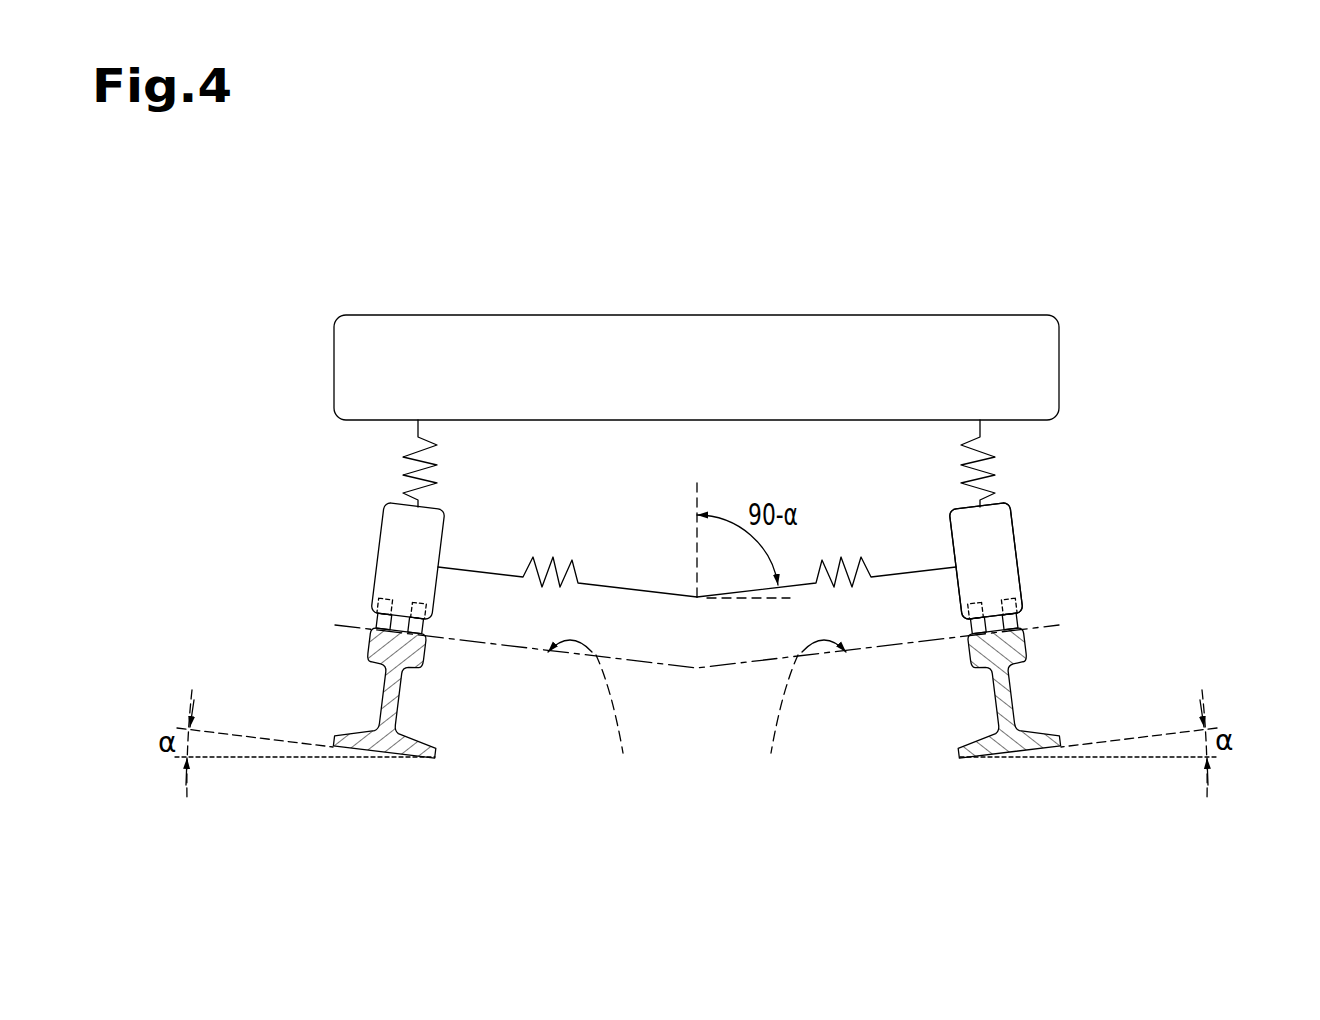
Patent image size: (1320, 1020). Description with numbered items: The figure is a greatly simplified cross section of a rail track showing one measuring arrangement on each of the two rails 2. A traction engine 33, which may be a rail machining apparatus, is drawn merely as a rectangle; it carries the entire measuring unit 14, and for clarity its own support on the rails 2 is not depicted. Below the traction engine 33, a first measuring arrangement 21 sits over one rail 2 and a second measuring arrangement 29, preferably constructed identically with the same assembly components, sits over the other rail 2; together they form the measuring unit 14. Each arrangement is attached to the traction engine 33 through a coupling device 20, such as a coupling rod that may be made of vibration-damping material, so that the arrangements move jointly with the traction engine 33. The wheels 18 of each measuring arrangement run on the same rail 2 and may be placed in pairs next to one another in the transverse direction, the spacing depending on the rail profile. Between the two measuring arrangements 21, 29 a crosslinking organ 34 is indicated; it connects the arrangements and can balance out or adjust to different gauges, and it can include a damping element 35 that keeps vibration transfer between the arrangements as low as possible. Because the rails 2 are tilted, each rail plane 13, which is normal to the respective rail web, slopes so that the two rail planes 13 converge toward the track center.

The rail 2 is at (355, 686).
The rail plane 13 is at (697, 714).
The measuring unit 14 is at (843, 455).
The wheel 18 is at (370, 619).
The coupling device 20 is at (382, 466).
The first measuring arrangement 21 is at (1042, 557).
The second measuring arrangement 29 is at (352, 568).
The traction engine 33 is at (925, 291).
The crosslinking organ 34 is at (660, 567).
The damping element 35 is at (565, 550).